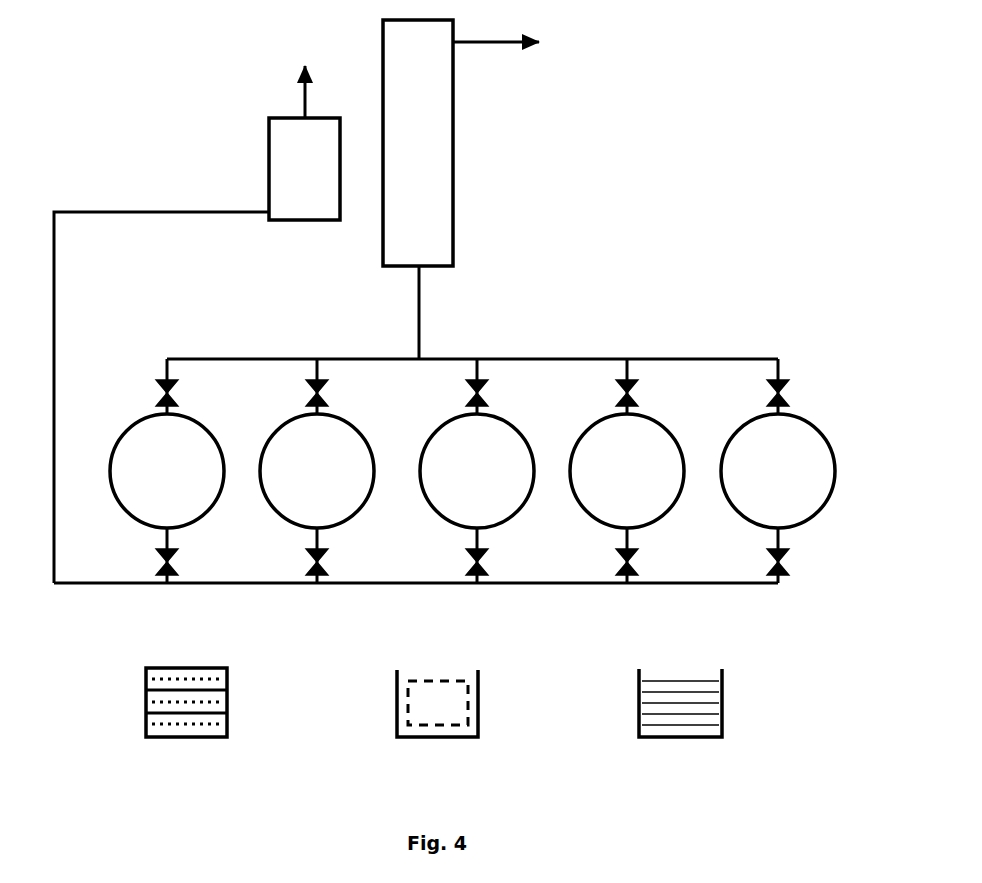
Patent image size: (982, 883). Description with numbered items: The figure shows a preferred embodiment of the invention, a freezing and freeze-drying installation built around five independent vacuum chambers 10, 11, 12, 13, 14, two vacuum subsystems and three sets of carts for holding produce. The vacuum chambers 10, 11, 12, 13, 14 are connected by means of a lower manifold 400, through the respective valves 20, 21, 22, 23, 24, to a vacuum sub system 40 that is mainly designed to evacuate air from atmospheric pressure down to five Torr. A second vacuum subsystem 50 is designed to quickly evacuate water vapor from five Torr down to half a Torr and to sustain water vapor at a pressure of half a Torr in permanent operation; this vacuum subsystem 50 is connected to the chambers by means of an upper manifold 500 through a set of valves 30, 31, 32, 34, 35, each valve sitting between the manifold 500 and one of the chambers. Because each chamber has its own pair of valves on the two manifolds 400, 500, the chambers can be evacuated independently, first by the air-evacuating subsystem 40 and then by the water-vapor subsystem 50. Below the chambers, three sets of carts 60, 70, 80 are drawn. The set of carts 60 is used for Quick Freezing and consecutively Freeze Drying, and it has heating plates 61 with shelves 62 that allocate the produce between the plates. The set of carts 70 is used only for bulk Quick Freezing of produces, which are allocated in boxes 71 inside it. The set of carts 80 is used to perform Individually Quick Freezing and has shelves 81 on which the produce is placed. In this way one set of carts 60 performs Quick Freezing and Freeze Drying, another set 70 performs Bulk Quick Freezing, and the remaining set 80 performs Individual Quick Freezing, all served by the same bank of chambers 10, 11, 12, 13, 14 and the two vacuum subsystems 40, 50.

The vacuum chamber 10 is at (167, 471).
The vacuum chamber 11 is at (317, 471).
The vacuum chamber 12 is at (477, 471).
The vacuum chamber 13 is at (627, 471).
The vacuum chamber 14 is at (778, 471).
The valve 20 is at (183, 555).
The valve 21 is at (333, 555).
The valve 22 is at (493, 555).
The valve 23 is at (643, 555).
The valve 24 is at (794, 555).
The valve 30 is at (183, 386).
The valve 31 is at (333, 386).
The valve 32 is at (493, 386).
The valve 34 is at (643, 386).
The outlet valve 35 is at (794, 386).
The vacuum sub system 40 is at (281, 143).
The vacuum subsystem 50 is at (461, 143).
The set of carts 60 is at (185, 731).
The heating plates 61 is at (142, 732).
The shelves 62 is at (208, 680).
The set of carts 70 is at (488, 728).
The boxes 71 is at (468, 703).
The set of carts 80 is at (725, 727).
The shelves 81 is at (688, 703).
The manifold 400 is at (742, 583).
The manifold 500 is at (240, 353).